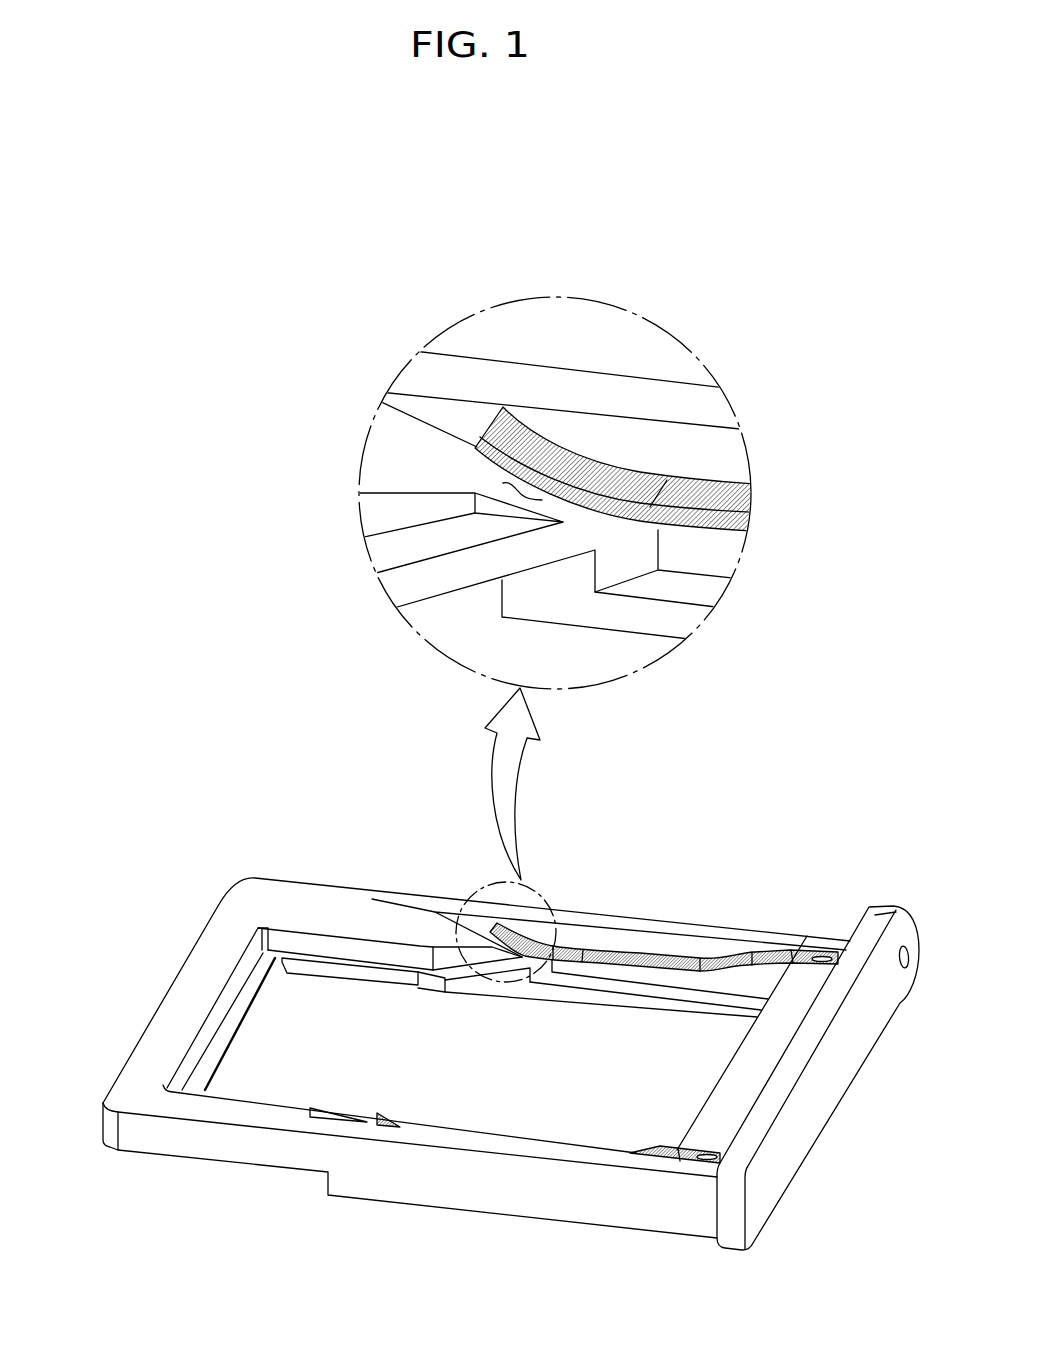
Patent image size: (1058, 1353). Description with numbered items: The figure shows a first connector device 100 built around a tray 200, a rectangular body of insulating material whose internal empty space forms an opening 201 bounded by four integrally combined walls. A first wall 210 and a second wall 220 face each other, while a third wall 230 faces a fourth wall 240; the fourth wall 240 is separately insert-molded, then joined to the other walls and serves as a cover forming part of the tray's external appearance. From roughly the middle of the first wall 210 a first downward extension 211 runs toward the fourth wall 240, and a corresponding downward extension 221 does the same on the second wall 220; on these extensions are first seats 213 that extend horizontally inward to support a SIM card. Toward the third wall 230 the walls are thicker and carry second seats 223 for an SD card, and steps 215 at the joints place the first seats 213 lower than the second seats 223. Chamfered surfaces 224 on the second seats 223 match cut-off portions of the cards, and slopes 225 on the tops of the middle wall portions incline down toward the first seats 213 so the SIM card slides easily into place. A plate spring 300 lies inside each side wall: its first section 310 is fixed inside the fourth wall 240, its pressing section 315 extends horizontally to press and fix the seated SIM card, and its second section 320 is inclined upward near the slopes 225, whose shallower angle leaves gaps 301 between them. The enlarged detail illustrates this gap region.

The first connector device 100 is at (426, 788).
The tray 200 is at (96, 1135).
The opening 201 is at (533, 1095).
The first wall 210 is at (237, 1142).
The 1-1 extension 211 is at (537, 1207).
The first seats 213 is at (673, 993).
The steps 215 is at (537, 975).
The second wall 220 is at (373, 900).
The 2-1 extension 221 is at (758, 990).
The second seats 223 is at (250, 993).
The chamfered surfaces 224 is at (482, 977).
The slopes 225 is at (436, 910).
The third wall 230 is at (178, 998).
The fourth wall 240 is at (838, 1058).
The plate springs 300 is at (726, 806).
The gaps 301 is at (522, 492).
The first section 310 is at (757, 960).
The pressing section 315 is at (622, 955).
The second section 320 is at (583, 948).